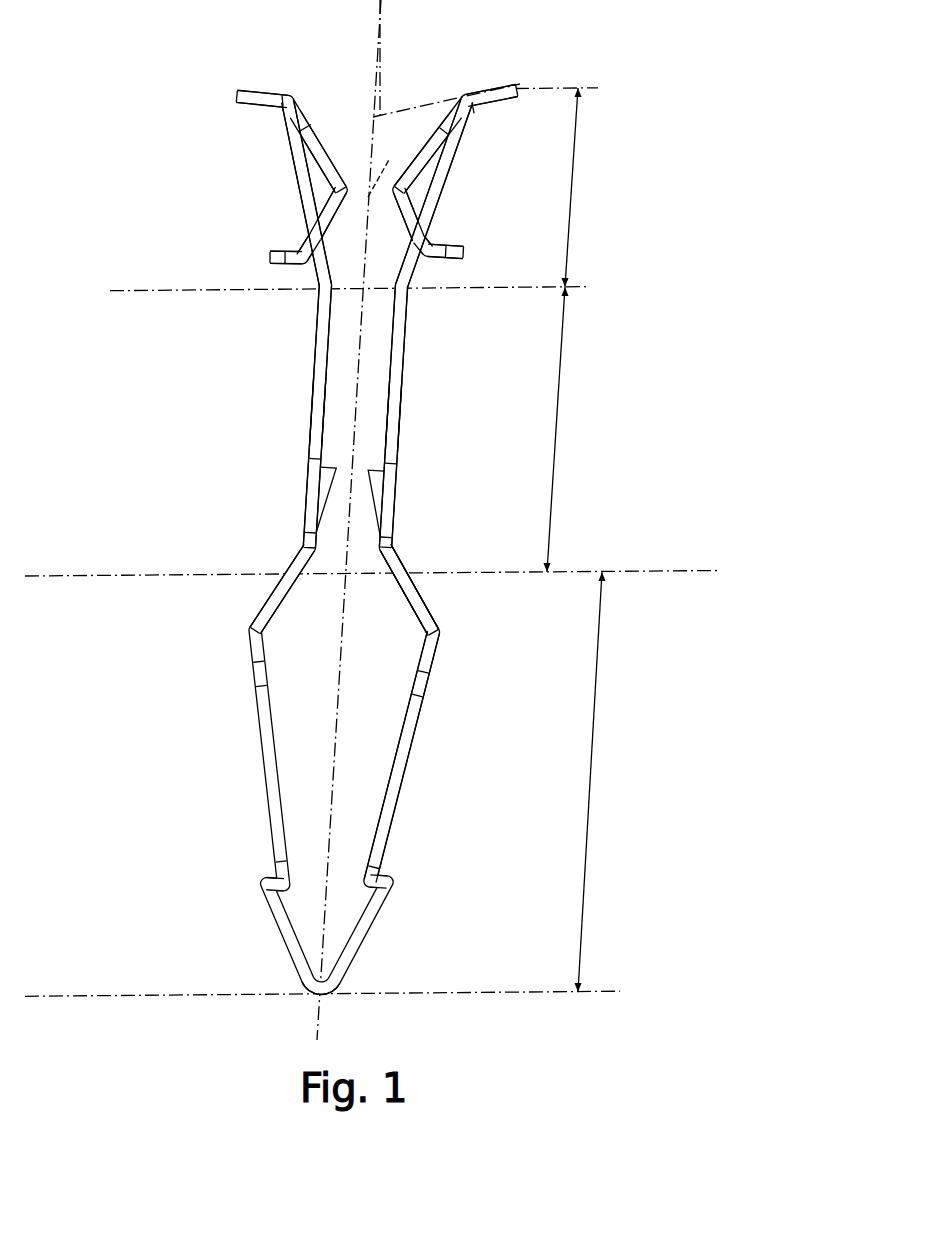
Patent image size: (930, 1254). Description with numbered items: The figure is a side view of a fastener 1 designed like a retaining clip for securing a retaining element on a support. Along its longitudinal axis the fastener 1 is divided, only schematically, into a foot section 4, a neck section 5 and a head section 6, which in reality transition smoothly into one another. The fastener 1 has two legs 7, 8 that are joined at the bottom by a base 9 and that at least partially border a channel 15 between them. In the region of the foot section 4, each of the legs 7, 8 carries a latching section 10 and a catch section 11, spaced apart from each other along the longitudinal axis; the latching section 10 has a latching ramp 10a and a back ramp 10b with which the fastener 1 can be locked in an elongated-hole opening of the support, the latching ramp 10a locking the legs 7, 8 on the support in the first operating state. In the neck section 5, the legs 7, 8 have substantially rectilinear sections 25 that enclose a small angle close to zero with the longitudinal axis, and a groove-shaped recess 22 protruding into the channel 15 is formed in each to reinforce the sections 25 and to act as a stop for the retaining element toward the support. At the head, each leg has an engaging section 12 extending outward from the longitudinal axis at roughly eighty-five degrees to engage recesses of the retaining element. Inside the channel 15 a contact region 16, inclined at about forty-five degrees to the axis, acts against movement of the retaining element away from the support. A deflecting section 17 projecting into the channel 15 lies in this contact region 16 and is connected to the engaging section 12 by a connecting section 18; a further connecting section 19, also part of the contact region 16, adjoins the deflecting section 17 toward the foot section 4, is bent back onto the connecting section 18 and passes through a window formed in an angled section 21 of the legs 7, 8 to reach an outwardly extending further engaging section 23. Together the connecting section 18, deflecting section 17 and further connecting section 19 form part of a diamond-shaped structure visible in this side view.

The fastener 1 is at (157, 468).
The foot section 4 is at (591, 782).
The neck section 5 is at (561, 429).
The head section 6 is at (577, 187).
The leg 7 is at (317, 333).
The leg 8 is at (400, 340).
The base 9 is at (318, 996).
The latching section 10 is at (238, 614).
The latching ramp 10a is at (436, 596).
The back ramp 10b is at (433, 690).
The catch section 11 is at (252, 866).
The engaging section 12 is at (247, 90).
The channel 15 is at (371, 348).
The contact region 16 is at (352, 213).
The deflecting section 17 is at (335, 192).
The connecting section 18 is at (317, 133).
The further connecting section 19 is at (322, 208).
The section of the legs 21 is at (457, 148).
The groove-shaped recess 22 is at (310, 480).
The further engaging section 23 is at (268, 258).
The rectilinear sections 25 is at (317, 413).